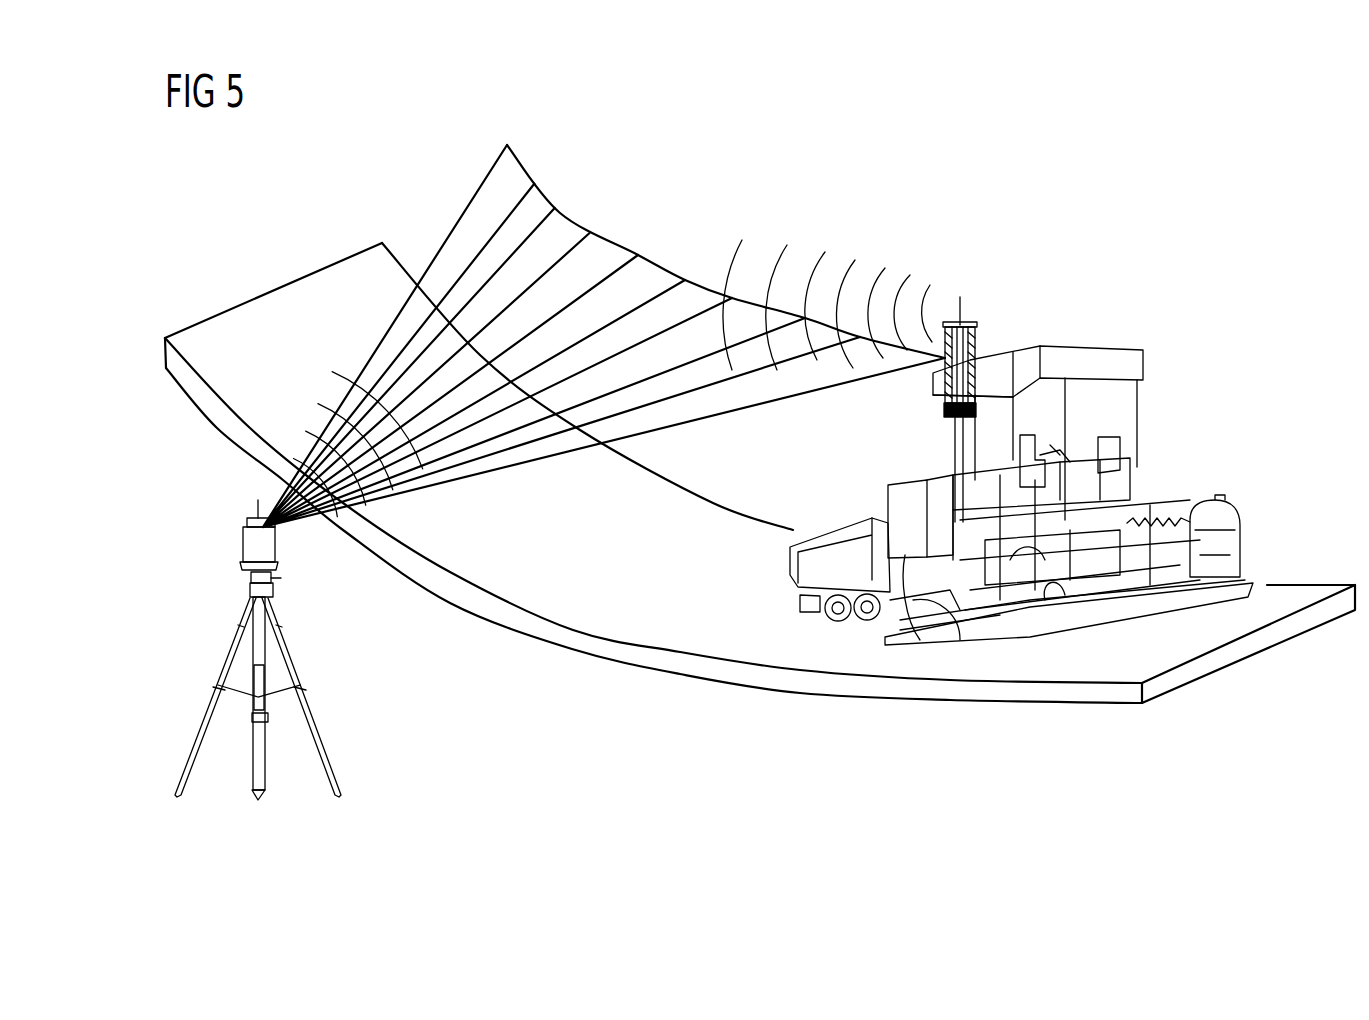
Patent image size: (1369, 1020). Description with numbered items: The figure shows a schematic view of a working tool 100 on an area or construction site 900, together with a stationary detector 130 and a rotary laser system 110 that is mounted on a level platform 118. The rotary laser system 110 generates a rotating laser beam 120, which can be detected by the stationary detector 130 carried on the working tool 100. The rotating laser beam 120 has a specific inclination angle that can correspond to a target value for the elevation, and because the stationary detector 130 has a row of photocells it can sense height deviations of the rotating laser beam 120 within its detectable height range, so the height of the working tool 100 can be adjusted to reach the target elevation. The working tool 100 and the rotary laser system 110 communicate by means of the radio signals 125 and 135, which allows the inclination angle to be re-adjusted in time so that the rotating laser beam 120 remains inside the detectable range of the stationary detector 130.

The working tool 100 is at (1027, 648).
The rotary laser system 110 is at (295, 565).
The level platform 118 is at (302, 686).
The rotating laser beam 120 is at (570, 237).
The radio signal 125 is at (897, 230).
The stationary detector 130 is at (994, 338).
The radio signal 135 is at (294, 418).
The construction site 900 is at (567, 597).